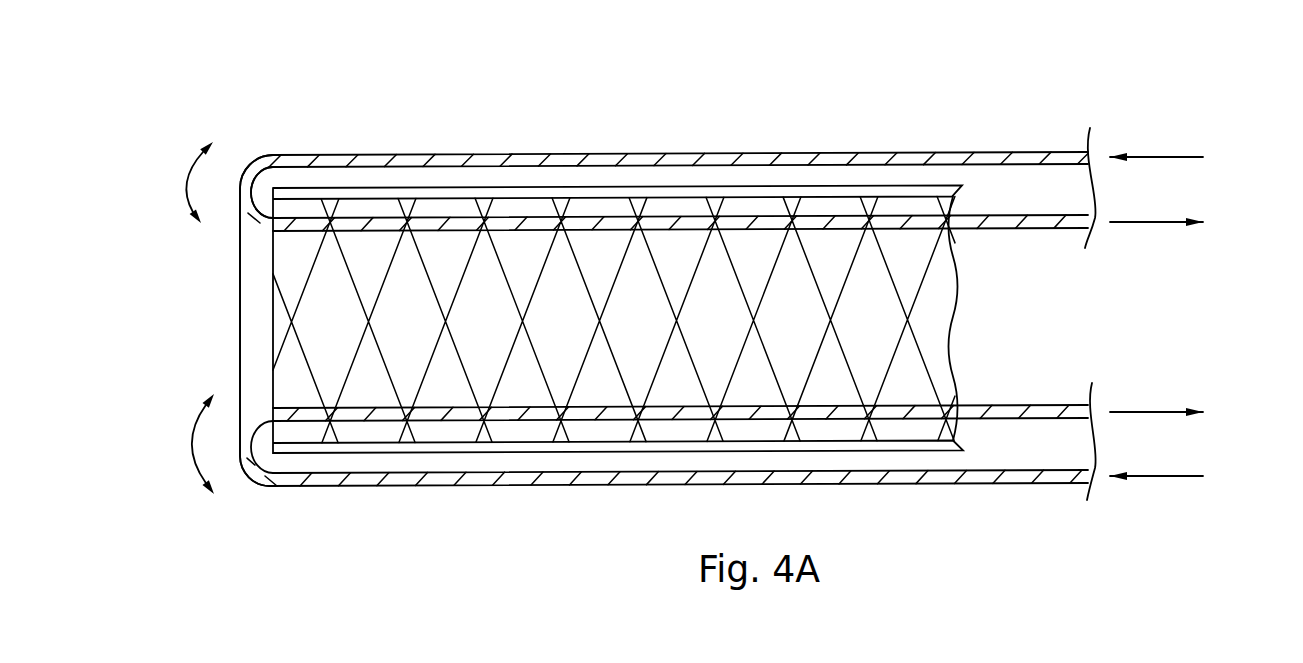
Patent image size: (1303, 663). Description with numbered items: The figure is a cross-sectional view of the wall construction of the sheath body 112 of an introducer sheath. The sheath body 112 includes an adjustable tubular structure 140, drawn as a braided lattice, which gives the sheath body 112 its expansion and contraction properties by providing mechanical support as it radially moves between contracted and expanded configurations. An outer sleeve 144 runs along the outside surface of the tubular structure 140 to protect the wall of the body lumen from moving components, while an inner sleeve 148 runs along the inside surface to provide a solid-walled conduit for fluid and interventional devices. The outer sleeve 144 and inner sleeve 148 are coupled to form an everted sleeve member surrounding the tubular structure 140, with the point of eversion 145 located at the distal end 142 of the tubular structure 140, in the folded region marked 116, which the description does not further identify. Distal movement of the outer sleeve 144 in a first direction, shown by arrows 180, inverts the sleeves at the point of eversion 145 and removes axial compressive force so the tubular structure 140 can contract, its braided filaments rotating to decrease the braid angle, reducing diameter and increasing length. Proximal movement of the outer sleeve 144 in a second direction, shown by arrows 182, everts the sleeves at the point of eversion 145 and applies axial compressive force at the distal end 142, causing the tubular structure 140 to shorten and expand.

The sheath body 112 is at (705, 288).
The everting fold region 116 is at (256, 320).
The tubular structure 140 is at (615, 319).
The distal end 142 is at (618, 319).
The outer sleeve 144 is at (668, 315).
The point of eversion 145 is at (262, 192).
The inner sleeve 148 is at (668, 318).
The arrows 180 is at (1200, 512).
The arrows 182 is at (1164, 317).